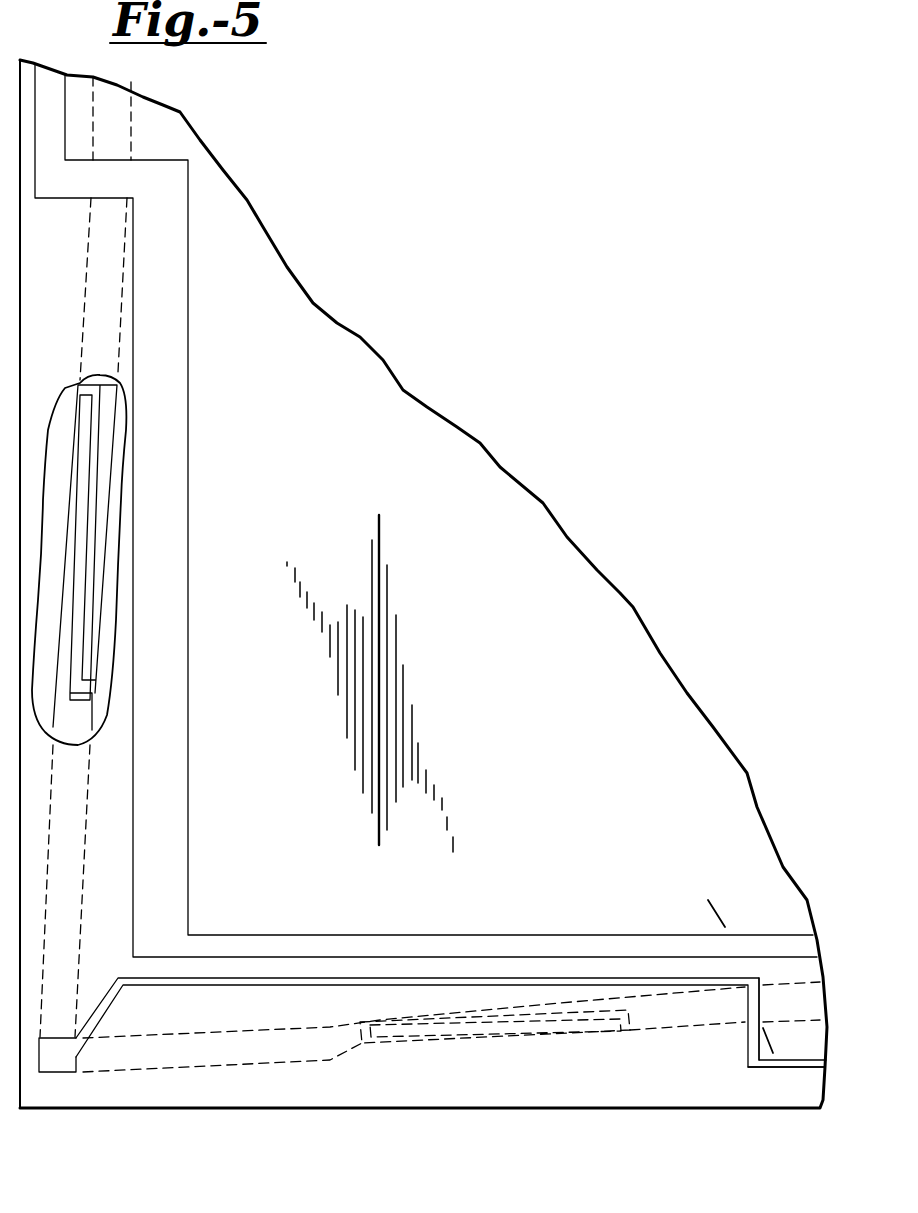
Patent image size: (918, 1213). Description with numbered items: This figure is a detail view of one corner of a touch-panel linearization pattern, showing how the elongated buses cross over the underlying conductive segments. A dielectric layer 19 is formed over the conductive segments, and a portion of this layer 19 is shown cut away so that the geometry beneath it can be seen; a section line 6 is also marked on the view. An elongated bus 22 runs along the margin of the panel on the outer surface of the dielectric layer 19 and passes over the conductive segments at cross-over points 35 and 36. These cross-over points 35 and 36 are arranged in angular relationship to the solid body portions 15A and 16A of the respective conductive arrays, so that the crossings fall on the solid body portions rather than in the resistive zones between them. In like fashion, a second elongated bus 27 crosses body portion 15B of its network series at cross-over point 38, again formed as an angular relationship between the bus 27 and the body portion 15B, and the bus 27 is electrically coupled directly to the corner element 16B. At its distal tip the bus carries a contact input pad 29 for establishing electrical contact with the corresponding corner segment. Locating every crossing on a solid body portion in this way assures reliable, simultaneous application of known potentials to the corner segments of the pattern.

The section line 6- 6 is at (713, 903).
The body portion 15A is at (628, 1032).
The body portion 15B is at (363, 1013).
The body portion 16A is at (120, 316).
The corner element 16B is at (80, 906).
The dielectric layer 19 is at (110, 800).
The elongated bus 22 is at (188, 475).
The elongated bus 27 is at (455, 978).
The contact input pad 29 is at (62, 1072).
The cross-over point 35 is at (132, 163).
The cross-over point 36 is at (762, 985).
The cross-over point 38 is at (747, 1040).